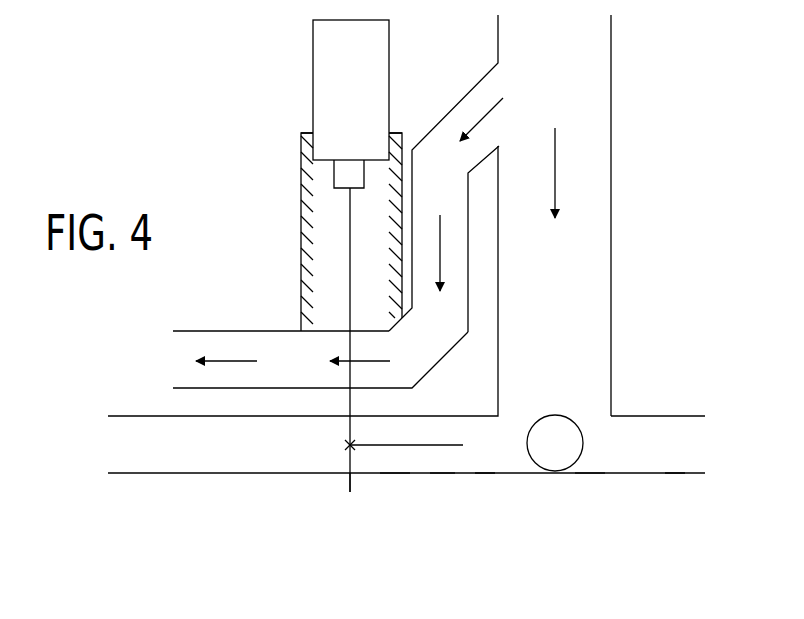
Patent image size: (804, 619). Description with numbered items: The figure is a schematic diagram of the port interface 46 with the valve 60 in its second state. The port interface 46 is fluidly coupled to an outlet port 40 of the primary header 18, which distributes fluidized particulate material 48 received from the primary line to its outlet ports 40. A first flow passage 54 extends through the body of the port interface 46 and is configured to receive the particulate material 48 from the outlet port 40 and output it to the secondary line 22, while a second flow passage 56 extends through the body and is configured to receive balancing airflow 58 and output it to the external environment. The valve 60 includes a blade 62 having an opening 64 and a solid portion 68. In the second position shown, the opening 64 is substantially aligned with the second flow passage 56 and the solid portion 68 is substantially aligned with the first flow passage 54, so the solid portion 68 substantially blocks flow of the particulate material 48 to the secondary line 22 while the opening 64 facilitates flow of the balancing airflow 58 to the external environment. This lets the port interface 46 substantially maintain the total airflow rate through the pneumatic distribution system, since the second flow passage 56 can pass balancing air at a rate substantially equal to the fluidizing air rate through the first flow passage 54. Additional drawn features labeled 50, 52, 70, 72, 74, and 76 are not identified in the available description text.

The primary header 18 is at (612, 413).
The secondary line 22 is at (142, 474).
The outlet port 40 is at (485, 475).
The port interface 46 is at (366, 490).
The particulate material 48 is at (555, 172).
The housing wall 50 is at (611, 218).
The substrate surface 52 is at (590, 475).
The first flow passage 54 is at (393, 475).
The second flow passage 56 is at (383, 388).
The balancing airflow 58 is at (482, 118).
The valve 60 is at (274, 282).
The blade 62 is at (348, 483).
The opening 64 is at (352, 343).
The solid portion 68 is at (350, 232).
The deposit 70 is at (442, 475).
The actuator 72 is at (313, 53).
The seal 74 is at (337, 331).
The sleeve 76 is at (301, 160).